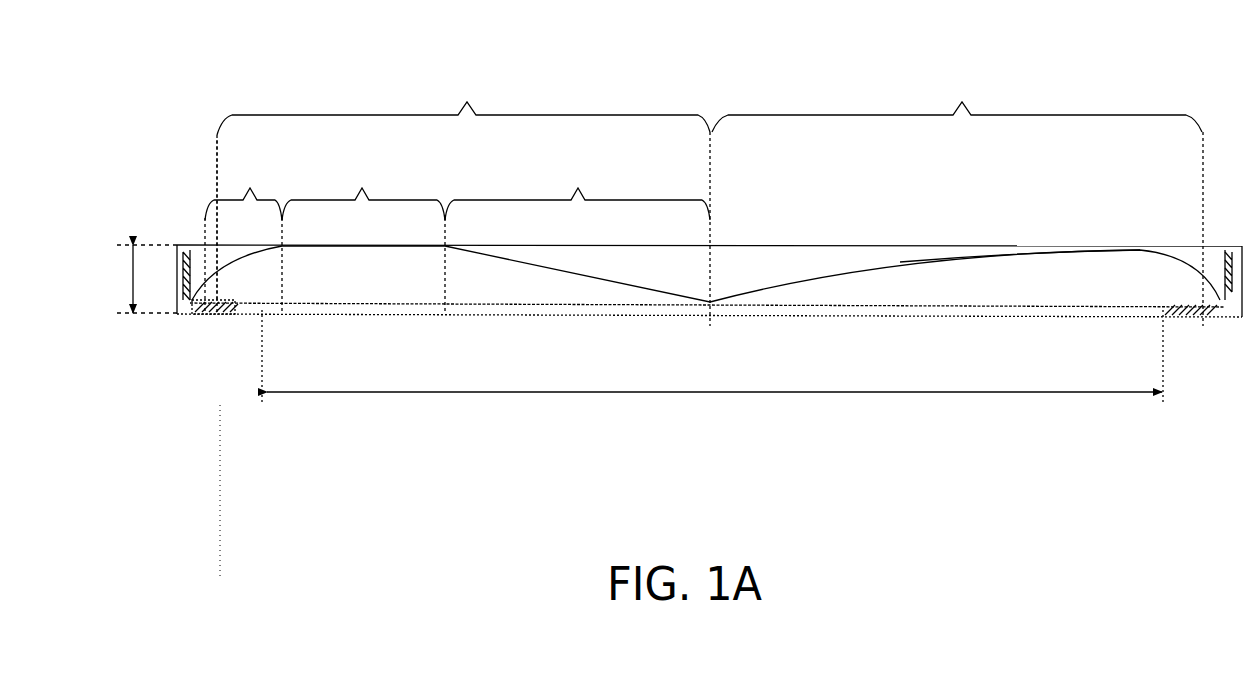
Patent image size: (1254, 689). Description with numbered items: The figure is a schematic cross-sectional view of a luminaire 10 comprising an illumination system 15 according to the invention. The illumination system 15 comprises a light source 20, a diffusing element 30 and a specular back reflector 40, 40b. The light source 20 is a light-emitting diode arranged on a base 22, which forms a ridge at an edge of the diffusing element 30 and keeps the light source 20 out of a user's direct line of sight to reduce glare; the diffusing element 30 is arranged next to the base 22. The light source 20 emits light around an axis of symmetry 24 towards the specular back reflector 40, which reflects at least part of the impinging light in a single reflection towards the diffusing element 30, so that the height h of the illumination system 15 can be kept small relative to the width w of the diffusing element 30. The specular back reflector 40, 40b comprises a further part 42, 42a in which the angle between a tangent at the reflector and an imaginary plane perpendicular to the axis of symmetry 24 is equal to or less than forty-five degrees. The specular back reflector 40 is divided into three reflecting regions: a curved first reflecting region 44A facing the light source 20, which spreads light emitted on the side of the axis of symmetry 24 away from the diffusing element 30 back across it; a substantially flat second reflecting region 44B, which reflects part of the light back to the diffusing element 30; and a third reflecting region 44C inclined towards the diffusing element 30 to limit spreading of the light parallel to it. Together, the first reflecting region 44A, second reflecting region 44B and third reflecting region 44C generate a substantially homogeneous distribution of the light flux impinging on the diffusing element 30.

The luminaire 10 is at (1169, 29).
The illumination system 15 is at (363, 407).
The light source 20 is at (223, 297).
The base 22 is at (224, 315).
The axis of symmetry 24 is at (214, 170).
The diffusing element 30 is at (535, 306).
The specular back reflector 40 is at (566, 272).
The specular back reflector 40b is at (957, 256).
The further part 42 is at (463, 104).
The further part 42a is at (957, 103).
The first reflecting region 44A is at (243, 190).
The second reflecting region 44B is at (363, 190).
The third reflecting region 44C is at (577, 190).